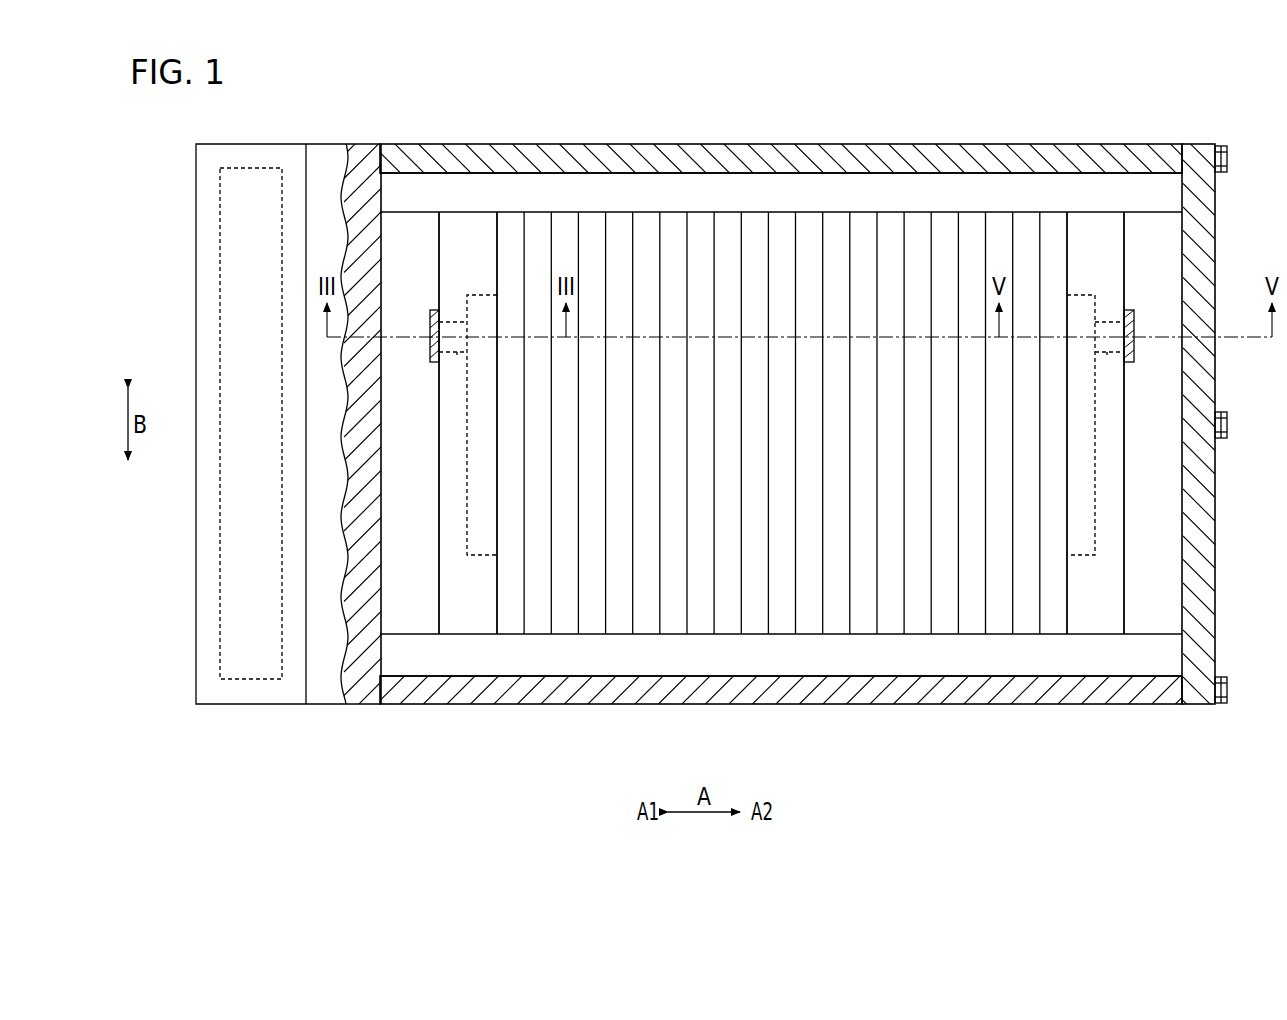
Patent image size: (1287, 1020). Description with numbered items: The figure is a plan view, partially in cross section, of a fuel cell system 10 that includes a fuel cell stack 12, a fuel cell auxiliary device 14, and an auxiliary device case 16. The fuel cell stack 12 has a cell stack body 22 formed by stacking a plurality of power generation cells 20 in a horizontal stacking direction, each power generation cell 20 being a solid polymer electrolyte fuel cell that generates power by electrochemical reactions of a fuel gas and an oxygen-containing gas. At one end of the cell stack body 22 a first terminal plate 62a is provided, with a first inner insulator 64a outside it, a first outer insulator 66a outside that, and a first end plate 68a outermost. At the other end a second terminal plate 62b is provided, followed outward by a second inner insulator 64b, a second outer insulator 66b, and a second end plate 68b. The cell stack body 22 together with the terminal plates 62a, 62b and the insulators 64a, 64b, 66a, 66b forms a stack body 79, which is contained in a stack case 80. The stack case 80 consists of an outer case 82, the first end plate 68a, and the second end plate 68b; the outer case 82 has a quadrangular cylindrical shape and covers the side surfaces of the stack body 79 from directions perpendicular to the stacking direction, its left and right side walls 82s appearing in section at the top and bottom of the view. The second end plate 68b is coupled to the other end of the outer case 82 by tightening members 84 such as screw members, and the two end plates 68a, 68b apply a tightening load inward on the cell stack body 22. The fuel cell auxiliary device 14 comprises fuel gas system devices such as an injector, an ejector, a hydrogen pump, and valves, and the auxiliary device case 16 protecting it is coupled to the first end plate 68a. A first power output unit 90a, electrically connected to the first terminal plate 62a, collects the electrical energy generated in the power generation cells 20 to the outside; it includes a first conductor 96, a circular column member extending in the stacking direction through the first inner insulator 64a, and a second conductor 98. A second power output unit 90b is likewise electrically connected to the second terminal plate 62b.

The fuel cell system 10 is at (294, 104).
The fuel cell stack 12 is at (1136, 100).
The fuel cell auxiliary device 14 is at (271, 681).
The auxiliary device case 16 is at (240, 696).
The power generation cell 20 is at (811, 626).
The cell stack body 22 is at (917, 640).
The first terminal plate 62a is at (481, 305).
The second terminal plate 62b is at (1079, 305).
The first inner insulator 64a is at (470, 626).
The second inner insulator 64b is at (1095, 624).
The first outer insulator 66a is at (415, 626).
The second outer insulator 66b is at (1150, 624).
The first end plate 68a is at (366, 696).
The second end plate 68b is at (1198, 696).
The stack body 79 is at (1005, 646).
The stack case 80 is at (1208, 140).
The outer case 82 is at (926, 141).
The side wall 82s is at (838, 150).
The tightening member 84 is at (1230, 158).
The first power output unit 90a is at (432, 298).
The second power output unit 90b is at (1140, 345).
The first conductor 96 is at (457, 353).
The second conductor 98 is at (428, 323).